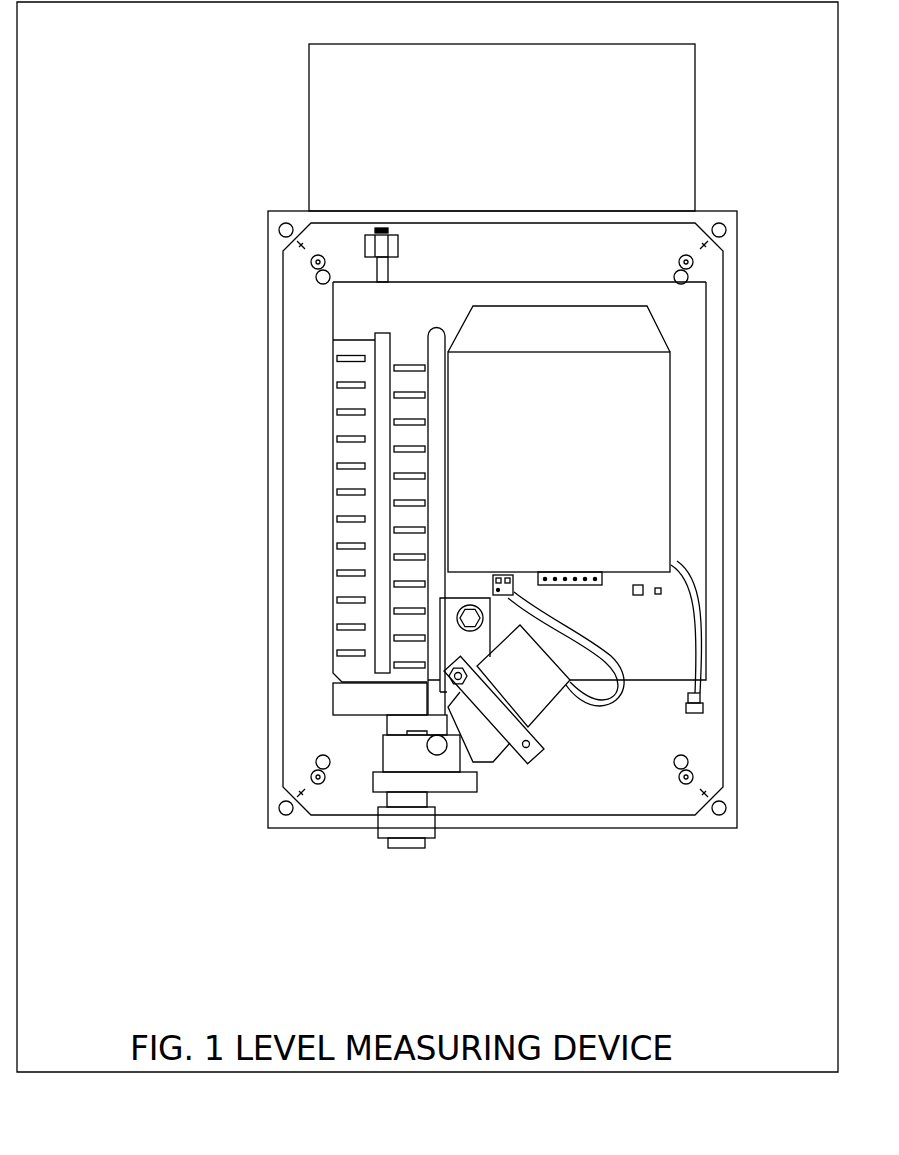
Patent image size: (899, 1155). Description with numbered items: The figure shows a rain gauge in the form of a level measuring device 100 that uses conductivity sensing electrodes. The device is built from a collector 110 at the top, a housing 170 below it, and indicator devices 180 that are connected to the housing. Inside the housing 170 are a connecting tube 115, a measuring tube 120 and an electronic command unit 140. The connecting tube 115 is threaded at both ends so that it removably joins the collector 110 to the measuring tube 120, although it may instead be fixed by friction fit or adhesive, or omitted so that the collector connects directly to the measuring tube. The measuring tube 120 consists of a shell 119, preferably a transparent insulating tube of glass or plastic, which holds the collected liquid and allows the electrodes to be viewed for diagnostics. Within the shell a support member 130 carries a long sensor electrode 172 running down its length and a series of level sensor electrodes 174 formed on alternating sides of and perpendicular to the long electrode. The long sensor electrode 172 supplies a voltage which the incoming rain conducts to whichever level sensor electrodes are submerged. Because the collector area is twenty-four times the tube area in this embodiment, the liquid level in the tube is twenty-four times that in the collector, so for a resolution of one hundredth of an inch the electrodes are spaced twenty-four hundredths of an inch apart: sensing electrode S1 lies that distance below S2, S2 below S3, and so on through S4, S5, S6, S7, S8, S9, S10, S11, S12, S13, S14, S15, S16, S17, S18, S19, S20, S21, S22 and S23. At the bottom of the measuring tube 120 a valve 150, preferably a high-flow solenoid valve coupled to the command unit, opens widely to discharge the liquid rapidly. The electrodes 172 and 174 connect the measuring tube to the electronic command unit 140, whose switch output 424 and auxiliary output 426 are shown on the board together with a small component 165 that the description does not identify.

The level measuring device 100 is at (518, 645).
The collector 110 is at (502, 127).
The connecting tube 115 is at (383, 270).
The shell 119 is at (332, 438).
The measuring tube 120 is at (332, 333).
The support member 130 is at (375, 302).
The electronic command unit 140 is at (559, 439).
The valve 150 is at (407, 757).
The indicator 165 is at (660, 593).
The housing 170 is at (620, 828).
The long sensor electrode 172 is at (383, 348).
The level sensor electrodes 174 is at (245, 515).
The indicator devices 180 is at (615, 481).
The switch output 424 is at (592, 578).
The auxiliary output 426 is at (712, 699).
The sensing electrode S1 is at (394, 665).
The sensing electrode S2 is at (335, 653).
The sensing electrode S3 is at (394, 638).
The sensor S4 is at (335, 627).
The sensor S5 is at (394, 611).
The sensor S6 is at (335, 600).
The sensor S7 is at (394, 584).
The sensor S8 is at (335, 573).
The sensor S9 is at (394, 557).
The sensor S10 is at (335, 546).
The sensor S11 is at (394, 530).
The sensor S12 is at (335, 519).
The sensor S13 is at (394, 503).
The sensor S14 is at (335, 492).
The sensor S15 is at (394, 476).
The sensor S16 is at (335, 466).
The sensor S17 is at (394, 449).
The sensor S18 is at (335, 439).
The sensor S19 is at (394, 422).
The sensor S20 is at (335, 412).
The sensor S21 is at (394, 395).
The sensor S22 is at (335, 385).
The sensor S23 is at (394, 368).